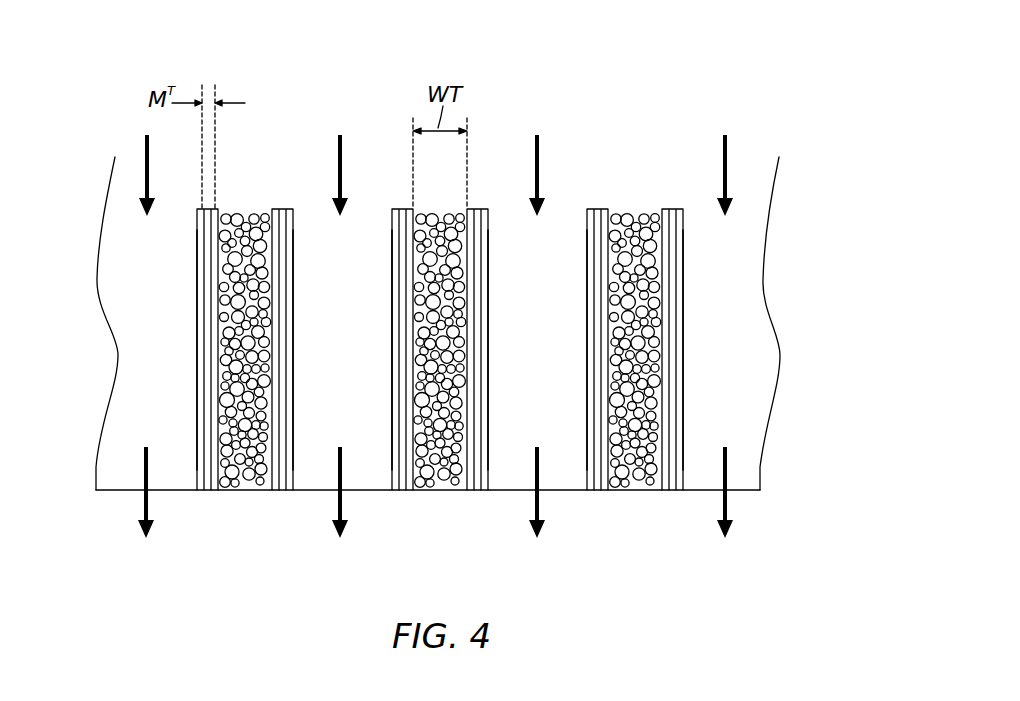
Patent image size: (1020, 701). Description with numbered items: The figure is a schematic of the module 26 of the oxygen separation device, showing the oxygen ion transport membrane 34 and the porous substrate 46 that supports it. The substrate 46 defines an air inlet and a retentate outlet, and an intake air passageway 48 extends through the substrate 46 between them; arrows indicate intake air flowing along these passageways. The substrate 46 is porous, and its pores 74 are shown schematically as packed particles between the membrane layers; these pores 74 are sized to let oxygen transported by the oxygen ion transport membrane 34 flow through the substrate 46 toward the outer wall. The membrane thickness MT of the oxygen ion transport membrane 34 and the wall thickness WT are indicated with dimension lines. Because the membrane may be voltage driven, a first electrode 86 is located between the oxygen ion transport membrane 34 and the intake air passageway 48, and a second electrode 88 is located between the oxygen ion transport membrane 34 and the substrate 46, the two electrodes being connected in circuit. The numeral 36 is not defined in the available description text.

The module 26 is at (702, 79).
The oxygen ion transport membrane 34 is at (207, 490).
The outer wall 36 is at (745, 470).
The substrate 46 is at (244, 212).
The intake air passageway 48 is at (121, 470).
The pores 74 is at (238, 490).
The first electrode 86 is at (197, 285).
The second electrode 88 is at (220, 212).